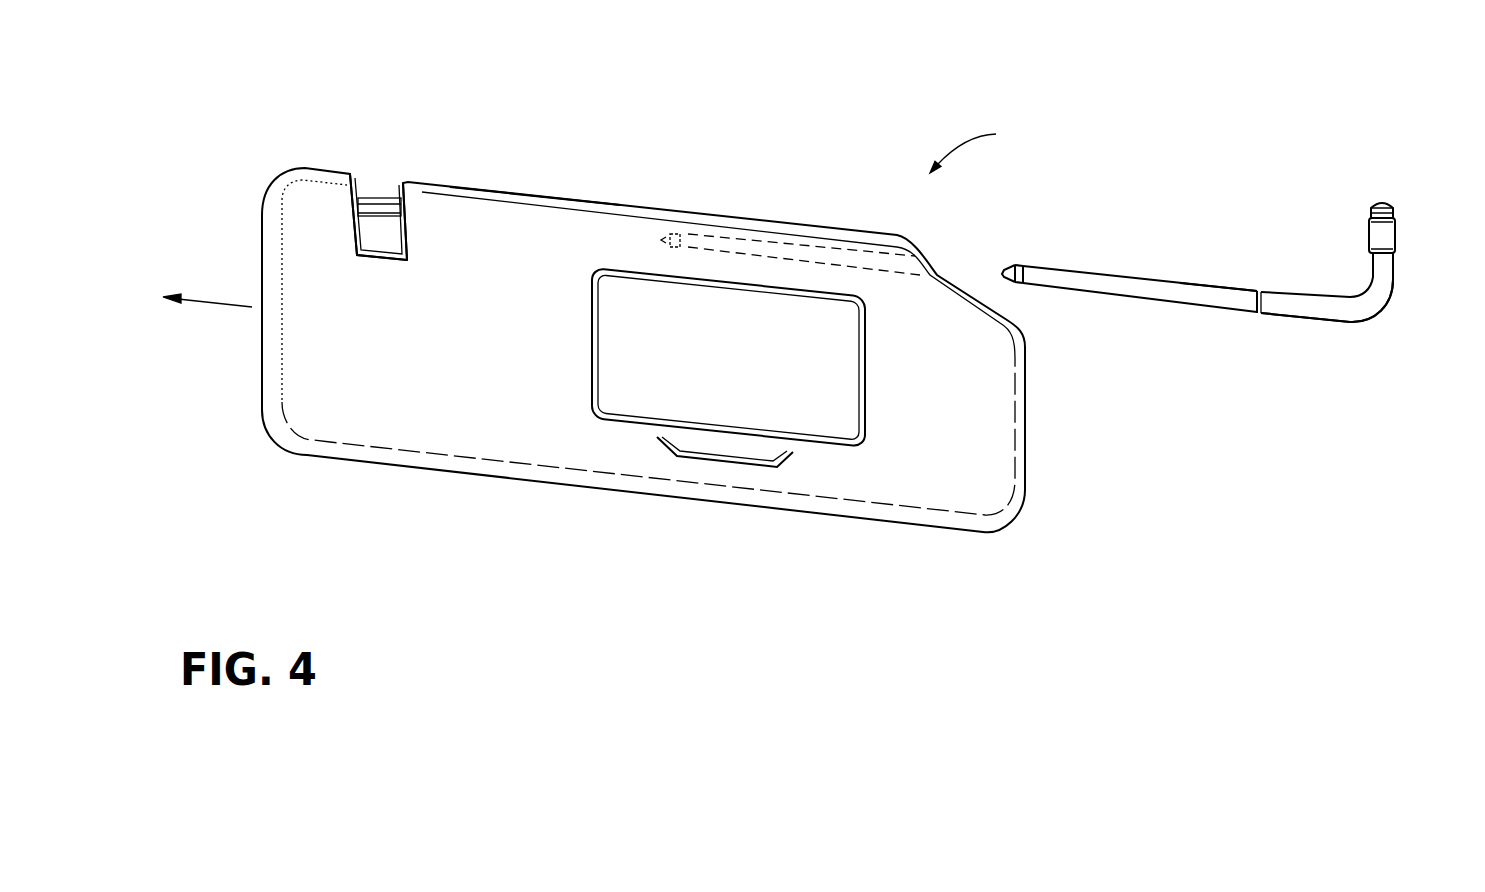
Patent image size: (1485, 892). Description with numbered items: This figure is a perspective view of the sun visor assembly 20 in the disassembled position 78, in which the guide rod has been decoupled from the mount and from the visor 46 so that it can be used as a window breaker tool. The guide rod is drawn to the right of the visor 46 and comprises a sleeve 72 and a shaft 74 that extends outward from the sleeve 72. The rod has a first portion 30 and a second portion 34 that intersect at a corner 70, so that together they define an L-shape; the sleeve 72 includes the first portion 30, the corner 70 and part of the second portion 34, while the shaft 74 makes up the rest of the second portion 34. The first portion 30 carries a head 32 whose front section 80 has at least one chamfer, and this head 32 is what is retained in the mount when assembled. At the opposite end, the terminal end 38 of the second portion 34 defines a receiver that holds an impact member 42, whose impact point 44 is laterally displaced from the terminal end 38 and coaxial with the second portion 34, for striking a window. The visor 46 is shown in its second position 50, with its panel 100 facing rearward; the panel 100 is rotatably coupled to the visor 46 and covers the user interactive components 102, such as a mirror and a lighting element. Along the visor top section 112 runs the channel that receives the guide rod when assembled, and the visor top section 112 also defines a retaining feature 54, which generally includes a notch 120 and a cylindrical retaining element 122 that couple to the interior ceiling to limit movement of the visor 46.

The sun visor assembly 20 is at (1178, 260).
The first portion 30 is at (1393, 282).
The head 32 is at (1367, 235).
The second portion 34 is at (1132, 279).
The terminal end 38 is at (1022, 269).
The impact member 42 is at (1008, 268).
The impact point 44 is at (1003, 271).
The visor 46 is at (273, 257).
The second position 50 is at (263, 350).
The retaining feature 54 is at (407, 217).
The corner 70 is at (1363, 322).
The sleeve 72 is at (1290, 317).
The shaft 74 is at (1207, 308).
The disassembled position 78 is at (1208, 289).
The front section 80 is at (1373, 205).
The panel 100 is at (637, 413).
The user interactive components 102 is at (800, 413).
The visor top section 112 is at (510, 197).
The notch 120 is at (370, 225).
The retaining element 122 is at (368, 195).